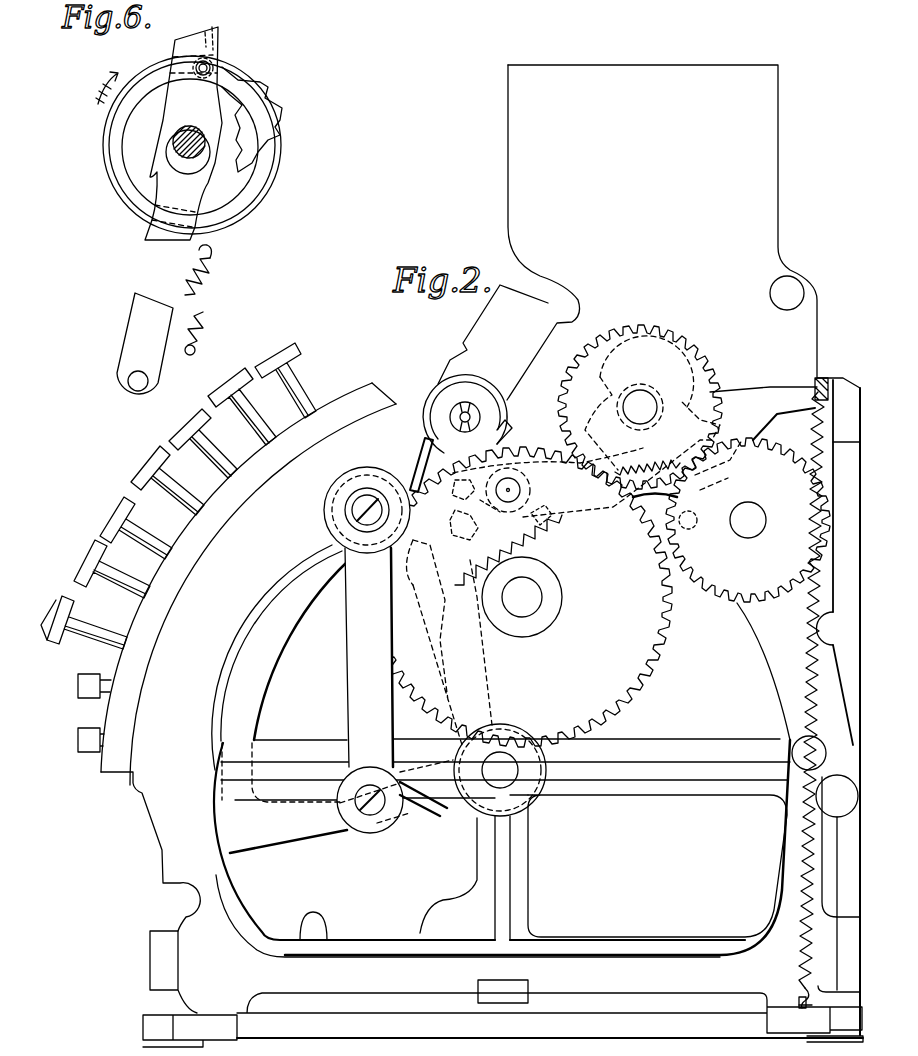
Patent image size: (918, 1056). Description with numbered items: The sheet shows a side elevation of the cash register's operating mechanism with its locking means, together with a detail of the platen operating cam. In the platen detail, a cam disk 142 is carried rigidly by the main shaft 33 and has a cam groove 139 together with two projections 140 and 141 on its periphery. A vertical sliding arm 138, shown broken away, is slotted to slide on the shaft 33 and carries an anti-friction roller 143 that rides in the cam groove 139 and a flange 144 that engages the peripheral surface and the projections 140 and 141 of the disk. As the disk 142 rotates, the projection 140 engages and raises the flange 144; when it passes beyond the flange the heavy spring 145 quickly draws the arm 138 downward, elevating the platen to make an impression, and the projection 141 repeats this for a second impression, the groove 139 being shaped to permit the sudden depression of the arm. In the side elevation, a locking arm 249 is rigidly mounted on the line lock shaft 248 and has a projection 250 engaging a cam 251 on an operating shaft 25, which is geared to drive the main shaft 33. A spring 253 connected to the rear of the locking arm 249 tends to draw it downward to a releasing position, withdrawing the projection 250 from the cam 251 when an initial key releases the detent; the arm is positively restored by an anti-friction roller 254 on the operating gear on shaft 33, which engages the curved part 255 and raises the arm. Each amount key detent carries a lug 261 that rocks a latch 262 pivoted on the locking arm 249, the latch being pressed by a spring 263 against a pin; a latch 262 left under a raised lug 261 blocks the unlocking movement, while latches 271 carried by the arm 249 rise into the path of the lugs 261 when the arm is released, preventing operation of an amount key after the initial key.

In FIG. 2, the operating shaft 25 is at (648, 400).
In FIG. 6, the main shaft 33 is at (196, 111).
In FIG. 2, the main shaft 33 is at (762, 515).
In FIG. 6, the vertical sliding arm 138 is at (135, 322).
In FIG. 6, the cam groove 139 is at (258, 188).
In FIG. 6, the projection 140 is at (282, 118).
In FIG. 6, the projection 141 is at (270, 90).
In FIG. 6, the cam disk 142 is at (245, 152).
In FIG. 6, the anti-friction roller 143 is at (212, 60).
In FIG. 6, the flange 144 is at (196, 27).
In FIG. 6, the heavy spring 145 is at (205, 283).
In FIG. 2, the line lock shaft 248 is at (513, 503).
In FIG. 2, the locking arm 249 is at (530, 490).
In FIG. 2, the projection 250 is at (648, 460).
In FIG. 2, the cam 251 is at (745, 400).
In FIG. 2, the spring 253 is at (814, 675).
In FIG. 2, the anti-friction roller 254 is at (692, 530).
In FIG. 2, the curved part 255 is at (725, 470).
In FIG. 2, the lug 261 is at (405, 478).
In FIG. 2, the latch 262 is at (435, 585).
In FIG. 2, the spring 263 is at (535, 558).
In FIG. 2, the latch 271 is at (480, 640).